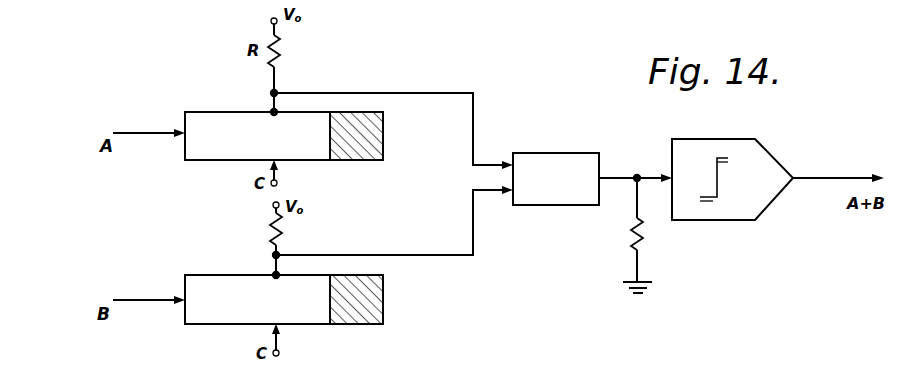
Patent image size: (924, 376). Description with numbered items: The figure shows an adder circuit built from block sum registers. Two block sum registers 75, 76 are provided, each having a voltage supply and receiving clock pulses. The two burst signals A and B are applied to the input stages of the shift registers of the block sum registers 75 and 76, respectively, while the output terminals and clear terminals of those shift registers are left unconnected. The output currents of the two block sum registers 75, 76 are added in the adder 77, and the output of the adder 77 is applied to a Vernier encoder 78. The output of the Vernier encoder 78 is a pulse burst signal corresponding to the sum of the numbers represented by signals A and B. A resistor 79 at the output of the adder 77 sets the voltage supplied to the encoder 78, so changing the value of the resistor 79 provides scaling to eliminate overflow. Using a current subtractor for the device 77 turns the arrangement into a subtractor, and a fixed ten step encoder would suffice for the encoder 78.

The block sum register 75 is at (200, 112).
The block sum register 76 is at (205, 275).
The adder 77 is at (562, 153).
The Vernier encoder 78 is at (740, 139).
The resistor 79 is at (631, 222).